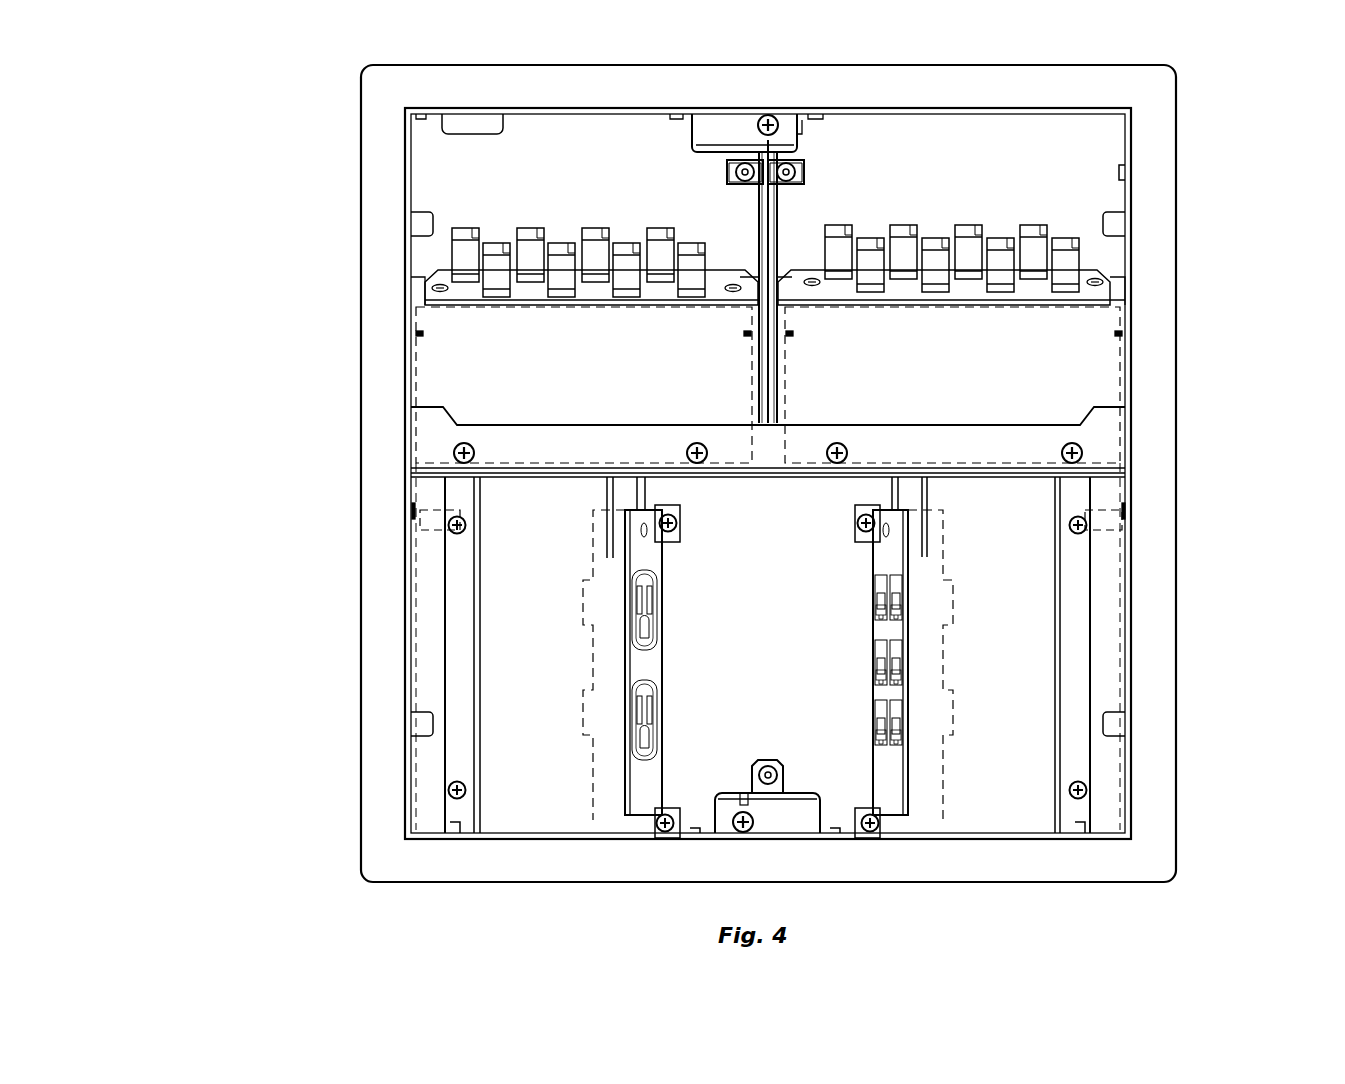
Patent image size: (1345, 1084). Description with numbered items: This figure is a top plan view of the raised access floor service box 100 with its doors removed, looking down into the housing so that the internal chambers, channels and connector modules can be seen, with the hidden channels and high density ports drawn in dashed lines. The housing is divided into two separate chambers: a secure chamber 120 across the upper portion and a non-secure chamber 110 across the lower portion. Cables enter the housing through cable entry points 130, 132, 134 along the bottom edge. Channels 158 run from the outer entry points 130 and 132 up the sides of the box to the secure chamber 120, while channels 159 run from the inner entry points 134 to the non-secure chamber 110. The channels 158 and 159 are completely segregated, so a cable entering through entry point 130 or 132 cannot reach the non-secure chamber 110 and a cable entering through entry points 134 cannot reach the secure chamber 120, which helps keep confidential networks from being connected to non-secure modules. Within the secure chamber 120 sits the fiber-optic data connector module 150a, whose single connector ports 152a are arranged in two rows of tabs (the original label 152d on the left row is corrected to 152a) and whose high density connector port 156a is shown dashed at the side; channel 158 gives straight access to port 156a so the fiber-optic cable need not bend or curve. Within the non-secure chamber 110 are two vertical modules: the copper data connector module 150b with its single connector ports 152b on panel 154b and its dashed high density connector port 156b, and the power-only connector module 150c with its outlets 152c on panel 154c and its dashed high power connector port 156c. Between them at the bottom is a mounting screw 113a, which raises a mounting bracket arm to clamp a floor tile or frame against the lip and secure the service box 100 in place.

The service box 100 is at (135, 86).
The non-secure chamber 110 is at (1240, 595).
The secure chamber 120 is at (1240, 215).
The cable entry point 130 is at (422, 898).
The cable entry point 132 is at (1107, 900).
The cable entry points 134 is at (552, 900).
The connector module 150a is at (497, 350).
The connector module 150b is at (1064, 692).
The connector module 150c is at (514, 692).
The connector port 152a is at (1063, 243).
The connector port 152b is at (898, 742).
The connector port 152c is at (640, 738).
The connector port 152d is at (465, 245).
The panel 154b is at (906, 815).
The panel 154c is at (660, 835).
The high density connector port 156a is at (420, 520).
The high density connector port 156b is at (955, 657).
The high power connector port 156c is at (590, 688).
The channel 158 is at (428, 765).
The channel 159 is at (520, 805).
The mounting screw 113a is at (760, 835).